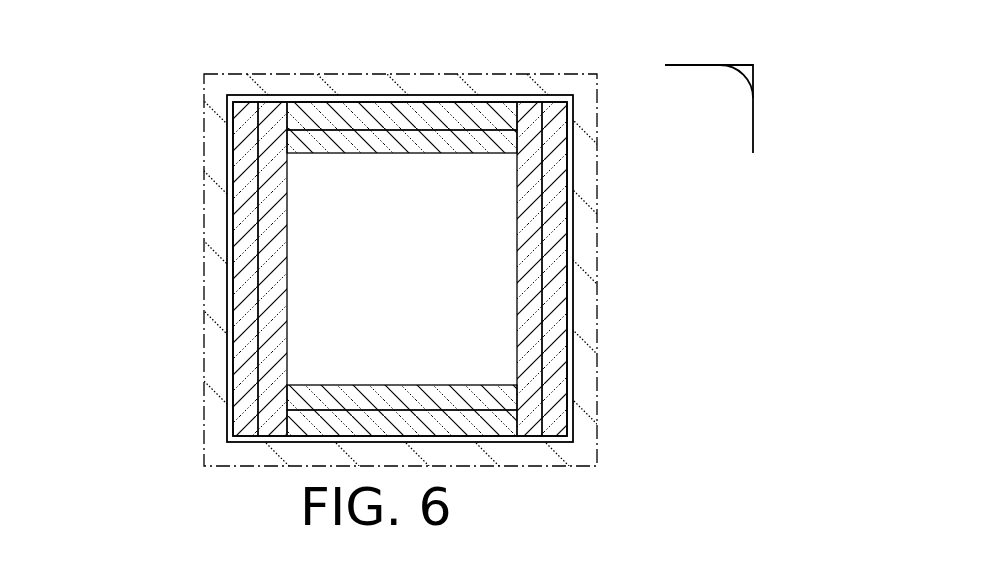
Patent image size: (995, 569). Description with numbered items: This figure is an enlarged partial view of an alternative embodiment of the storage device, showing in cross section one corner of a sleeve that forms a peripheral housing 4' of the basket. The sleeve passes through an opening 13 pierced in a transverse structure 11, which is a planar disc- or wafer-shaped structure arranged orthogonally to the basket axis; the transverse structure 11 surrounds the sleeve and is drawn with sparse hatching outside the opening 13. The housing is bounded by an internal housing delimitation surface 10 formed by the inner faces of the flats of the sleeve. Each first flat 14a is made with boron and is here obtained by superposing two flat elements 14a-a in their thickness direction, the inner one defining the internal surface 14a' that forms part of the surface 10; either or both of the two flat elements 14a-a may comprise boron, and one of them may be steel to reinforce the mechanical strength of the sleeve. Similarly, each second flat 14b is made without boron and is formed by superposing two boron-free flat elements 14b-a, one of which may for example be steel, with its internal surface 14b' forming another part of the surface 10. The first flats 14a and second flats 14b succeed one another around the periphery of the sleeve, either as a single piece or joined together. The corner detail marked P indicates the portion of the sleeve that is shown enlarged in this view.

The peripheral housing 4' is at (402, 199).
The opening 13 is at (364, 106).
The transverse structure 11 is at (448, 84).
The internal housing delimitation surface 10 is at (471, 154).
The second flat 14b is at (395, 265).
The flat boron-free element 14b-a is at (297, 115).
The internal surface of second flat 14b' is at (414, 269).
The first flat 14a is at (396, 269).
The flat element 14a-a is at (272, 318).
The internal surface of first flat 14a' is at (387, 269).
The plane section indicator P is at (743, 80).